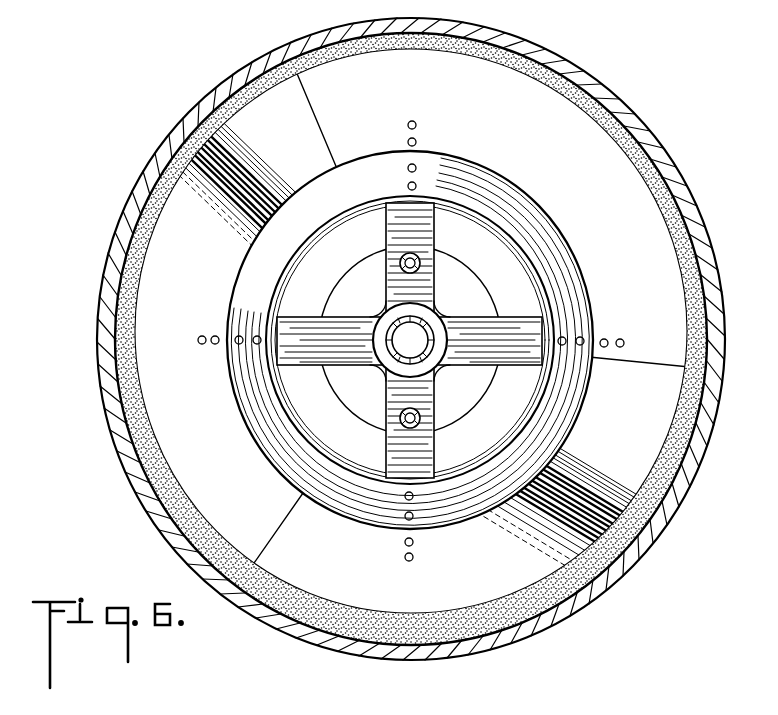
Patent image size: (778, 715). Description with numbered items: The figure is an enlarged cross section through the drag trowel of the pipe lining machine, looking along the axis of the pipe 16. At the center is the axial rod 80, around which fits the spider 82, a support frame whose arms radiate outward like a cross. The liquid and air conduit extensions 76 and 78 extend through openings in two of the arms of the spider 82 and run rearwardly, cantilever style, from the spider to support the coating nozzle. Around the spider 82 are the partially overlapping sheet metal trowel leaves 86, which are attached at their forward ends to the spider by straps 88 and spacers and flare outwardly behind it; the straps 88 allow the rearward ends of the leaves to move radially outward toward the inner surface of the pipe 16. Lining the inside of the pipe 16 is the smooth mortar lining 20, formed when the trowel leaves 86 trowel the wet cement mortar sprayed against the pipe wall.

The pipe 16 is at (228, 88).
The mortar lining 20 is at (341, 33).
The liquid conduit extension 76 is at (430, 423).
The air conduit extension 78 is at (433, 255).
The axial rod 80 is at (387, 355).
The spider 82 is at (298, 327).
The trowel leaves 86 is at (233, 138).
The straps 88 is at (545, 240).